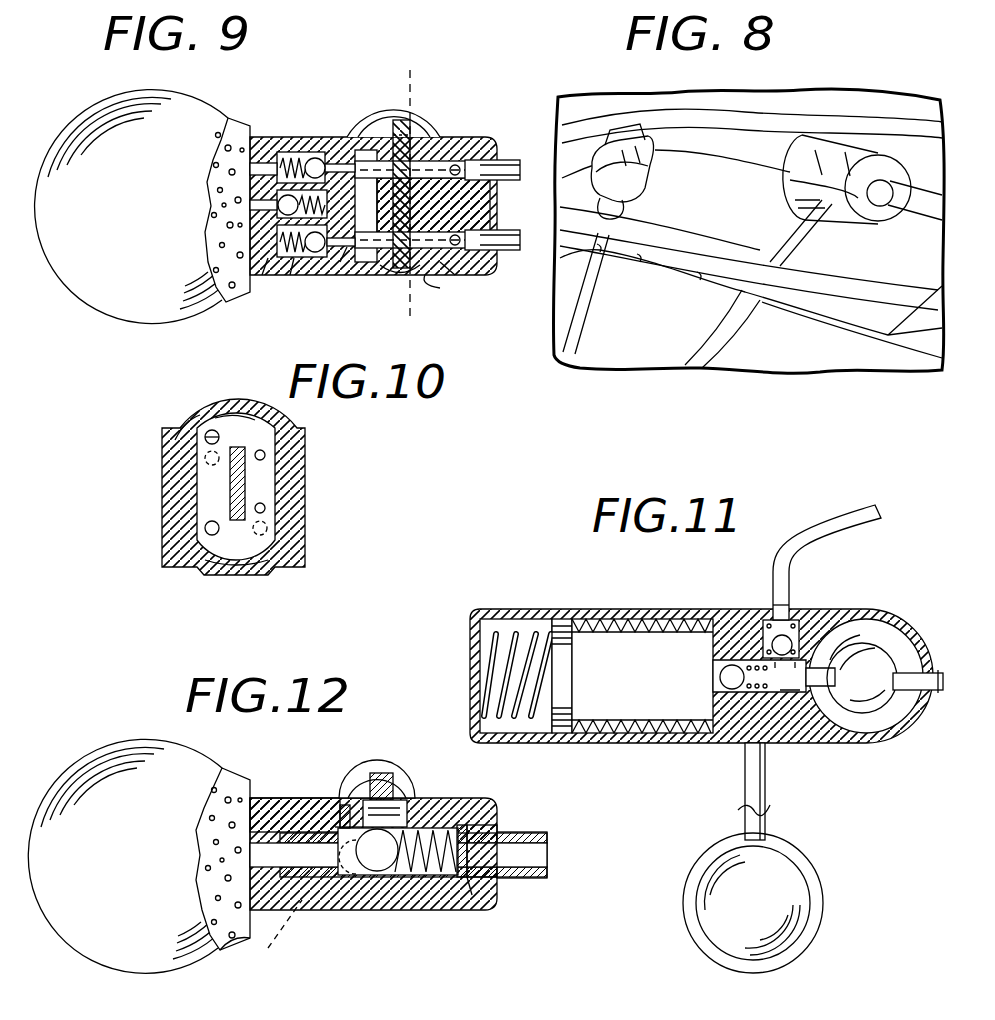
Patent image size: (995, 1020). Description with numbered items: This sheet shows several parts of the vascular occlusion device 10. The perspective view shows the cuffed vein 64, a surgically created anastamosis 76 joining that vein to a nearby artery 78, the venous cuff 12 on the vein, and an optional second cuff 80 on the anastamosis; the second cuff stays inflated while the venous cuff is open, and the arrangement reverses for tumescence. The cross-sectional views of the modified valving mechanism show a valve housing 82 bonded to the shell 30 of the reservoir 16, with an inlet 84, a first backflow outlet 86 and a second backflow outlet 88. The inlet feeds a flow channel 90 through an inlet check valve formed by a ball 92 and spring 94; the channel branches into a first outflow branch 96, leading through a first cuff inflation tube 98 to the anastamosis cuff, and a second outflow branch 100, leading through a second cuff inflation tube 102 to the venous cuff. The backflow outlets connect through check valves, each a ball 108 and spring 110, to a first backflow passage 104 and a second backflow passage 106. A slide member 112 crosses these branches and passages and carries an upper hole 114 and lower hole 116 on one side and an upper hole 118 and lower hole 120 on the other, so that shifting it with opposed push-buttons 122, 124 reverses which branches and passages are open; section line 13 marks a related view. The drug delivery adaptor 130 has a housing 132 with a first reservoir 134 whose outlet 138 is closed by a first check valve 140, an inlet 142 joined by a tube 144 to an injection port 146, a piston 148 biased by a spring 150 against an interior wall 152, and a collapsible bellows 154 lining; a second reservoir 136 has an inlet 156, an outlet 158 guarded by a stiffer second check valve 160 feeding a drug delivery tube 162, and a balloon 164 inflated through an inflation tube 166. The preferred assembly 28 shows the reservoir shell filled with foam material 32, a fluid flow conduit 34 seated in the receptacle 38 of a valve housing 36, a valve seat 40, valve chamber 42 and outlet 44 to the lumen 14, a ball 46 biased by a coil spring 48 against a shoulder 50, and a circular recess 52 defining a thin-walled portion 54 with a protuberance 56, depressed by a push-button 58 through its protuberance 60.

In FIG. 9, the vascular occlusion device 10 is at (410, 78).
In FIG. 8, the venous cuff 12 is at (895, 158).
In FIG. 12, the section line for FIG. 13 is at (272, 945).
In FIG. 12, the lumen 14 is at (528, 833).
In FIG. 9, the reservoir 16 is at (78, 116).
In FIG. 12, the reservoir 16 is at (108, 765).
In FIG. 12, the integral reservoir and valving mechanism assembly 28 is at (428, 912).
In FIG. 9, the shell 30 is at (236, 118).
In FIG. 12, the shell 30 is at (240, 785).
In FIG. 12, the open-celled elastomeric foam material 32 is at (248, 940).
In FIG. 12, the fluid flow conduit 34 is at (292, 815).
In FIG. 12, the valve housing 36 is at (352, 905).
In FIG. 12, the receptacle 38 is at (315, 880).
In FIG. 12, the valve seat 40 is at (378, 875).
In FIG. 12, the valve chamber 42 is at (455, 828).
In FIG. 12, the outlet 44 is at (478, 857).
In FIG. 12, the ball 46 is at (348, 880).
In FIG. 12, the coil spring 48 is at (487, 826).
In FIG. 12, the shoulder 50 is at (472, 895).
In FIG. 12, the circular recess 52 is at (344, 805).
In FIG. 12, the thin-walled portion 54 is at (457, 826).
In FIG. 12, the protuberance 56 is at (372, 790).
In FIG. 12, the push-button 58 is at (386, 773).
In FIG. 12, the protuberance 60 is at (398, 790).
In FIG. 8, the vein 64 is at (730, 137).
In FIG. 8, the anastamosis 76 is at (636, 212).
In FIG. 8, the artery 78 is at (714, 245).
In FIG. 8, the second cuff 80 is at (655, 170).
In FIG. 9, the valve housing 82 is at (325, 280).
In FIG. 9, the inlet 84 is at (265, 172).
In FIG. 9, the first backflow outlet 86 is at (262, 163).
In FIG. 9, the second backflow outlet 88 is at (262, 243).
In FIG. 9, the flow channel 90 is at (362, 150).
In FIG. 9, the ball 92 is at (280, 205).
In FIG. 9, the spring 94 is at (300, 152).
In FIG. 9, the first outflow branch 96 is at (480, 140).
In FIG. 10, the first outflow branch 96 is at (170, 482).
In FIG. 9, the first cuff inflation tube 98 is at (510, 160).
In FIG. 8, the first cuff inflation tube 98 is at (585, 318).
In FIG. 9, the second outflow branch 100 is at (470, 272).
In FIG. 9, the second cuff inflation tube 102 is at (500, 230).
In FIG. 8, the second cuff inflation tube 102 is at (815, 235).
In FIG. 9, the first backflow passage 104 is at (445, 130).
In FIG. 10, the first backflow passage 104 is at (265, 458).
In FIG. 9, the second backflow passage 106 is at (440, 282).
In FIG. 10, the second backflow passage 106 is at (268, 530).
In FIG. 9, the ball 108 is at (292, 278).
In FIG. 9, the spring 110 is at (262, 278).
In FIG. 10, the spring 110 is at (210, 535).
In FIG. 9, the slide member 112 is at (345, 270).
In FIG. 10, the slide member 112 is at (232, 415).
In FIG. 10, the upper hole 114 is at (205, 434).
In FIG. 10, the lower hole 116 is at (205, 527).
In FIG. 10, the upper hole 118 is at (266, 454).
In FIG. 10, the lower hole 120 is at (266, 507).
In FIG. 9, the push-button 122 is at (420, 118).
In FIG. 10, the push-button 122 is at (248, 400).
In FIG. 9, the push-button 124 is at (388, 272).
In FIG. 10, the push-button 124 is at (232, 572).
In FIG. 11, the drug delivery adaptor 130 is at (655, 605).
In FIG. 11, the housing 132 is at (860, 745).
In FIG. 11, the first reservoir 134 is at (668, 687).
In FIG. 11, the second reservoir 136 is at (870, 620).
In FIG. 11, the outlet 138 is at (722, 668).
In FIG. 11, the first check valve 140 is at (764, 620).
In FIG. 11, the inlet 142 is at (745, 752).
In FIG. 11, the tube 144 is at (748, 805).
In FIG. 11, the implantable injection port 146 is at (800, 915).
In FIG. 11, the piston 148 is at (562, 625).
In FIG. 11, the spring 150 is at (518, 640).
In FIG. 11, the interior wall 152 is at (480, 690).
In FIG. 11, the collapsible bellows 154 is at (648, 735).
In FIG. 11, the inlet 156 is at (790, 742).
In FIG. 11, the outlet 158 is at (803, 679).
In FIG. 11, the second check valve 160 is at (800, 620).
In FIG. 11, the drug delivery tube 162 is at (848, 505).
In FIG. 11, the balloon 164 is at (880, 650).
In FIG. 11, the inflation tube 166 is at (918, 700).